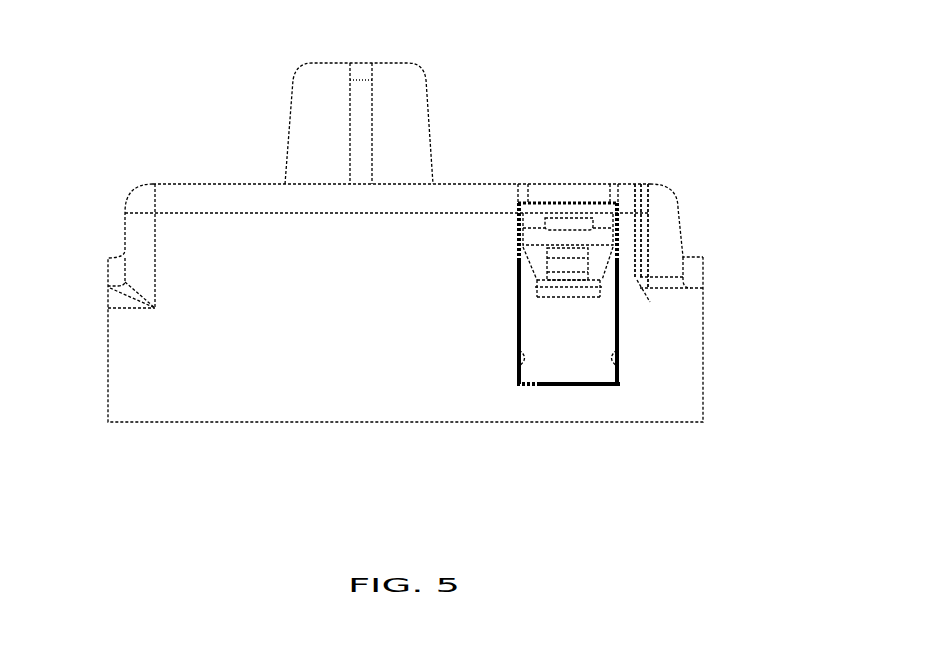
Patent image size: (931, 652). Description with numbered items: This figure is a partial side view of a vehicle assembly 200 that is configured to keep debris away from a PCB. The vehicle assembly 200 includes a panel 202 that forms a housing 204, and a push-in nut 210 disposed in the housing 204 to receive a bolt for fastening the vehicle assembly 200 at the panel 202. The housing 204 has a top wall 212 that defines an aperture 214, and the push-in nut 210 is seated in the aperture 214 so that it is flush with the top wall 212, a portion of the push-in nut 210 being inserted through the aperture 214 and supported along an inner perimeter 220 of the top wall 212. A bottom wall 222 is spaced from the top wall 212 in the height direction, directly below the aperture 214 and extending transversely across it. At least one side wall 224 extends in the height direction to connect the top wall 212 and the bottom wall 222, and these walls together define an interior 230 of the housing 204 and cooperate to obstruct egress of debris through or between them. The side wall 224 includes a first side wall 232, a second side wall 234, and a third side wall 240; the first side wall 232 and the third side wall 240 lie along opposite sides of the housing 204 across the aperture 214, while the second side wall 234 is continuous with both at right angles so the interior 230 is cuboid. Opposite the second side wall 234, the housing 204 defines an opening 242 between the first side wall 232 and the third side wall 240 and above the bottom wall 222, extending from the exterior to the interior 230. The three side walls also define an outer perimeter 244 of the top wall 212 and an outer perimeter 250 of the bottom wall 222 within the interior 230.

The vehicle assembly 200 is at (489, 77).
The panel 202 is at (691, 263).
The housing 204 is at (523, 184).
The push-in nut 210 is at (608, 262).
The top wall 212 is at (535, 210).
The aperture 214 is at (573, 193).
The inner perimeter 220 is at (595, 193).
The bottom wall 222 is at (572, 383).
The side wall 224 is at (525, 340).
The interior 230 is at (584, 342).
The first side wall 232 is at (528, 357).
The second side wall 234 is at (567, 363).
The third side wall 240 is at (620, 371).
The opening 242 is at (616, 330).
The outer perimeter of the top wall 244 is at (645, 232).
The outer perimeter of the bottom wall 250 is at (597, 384).